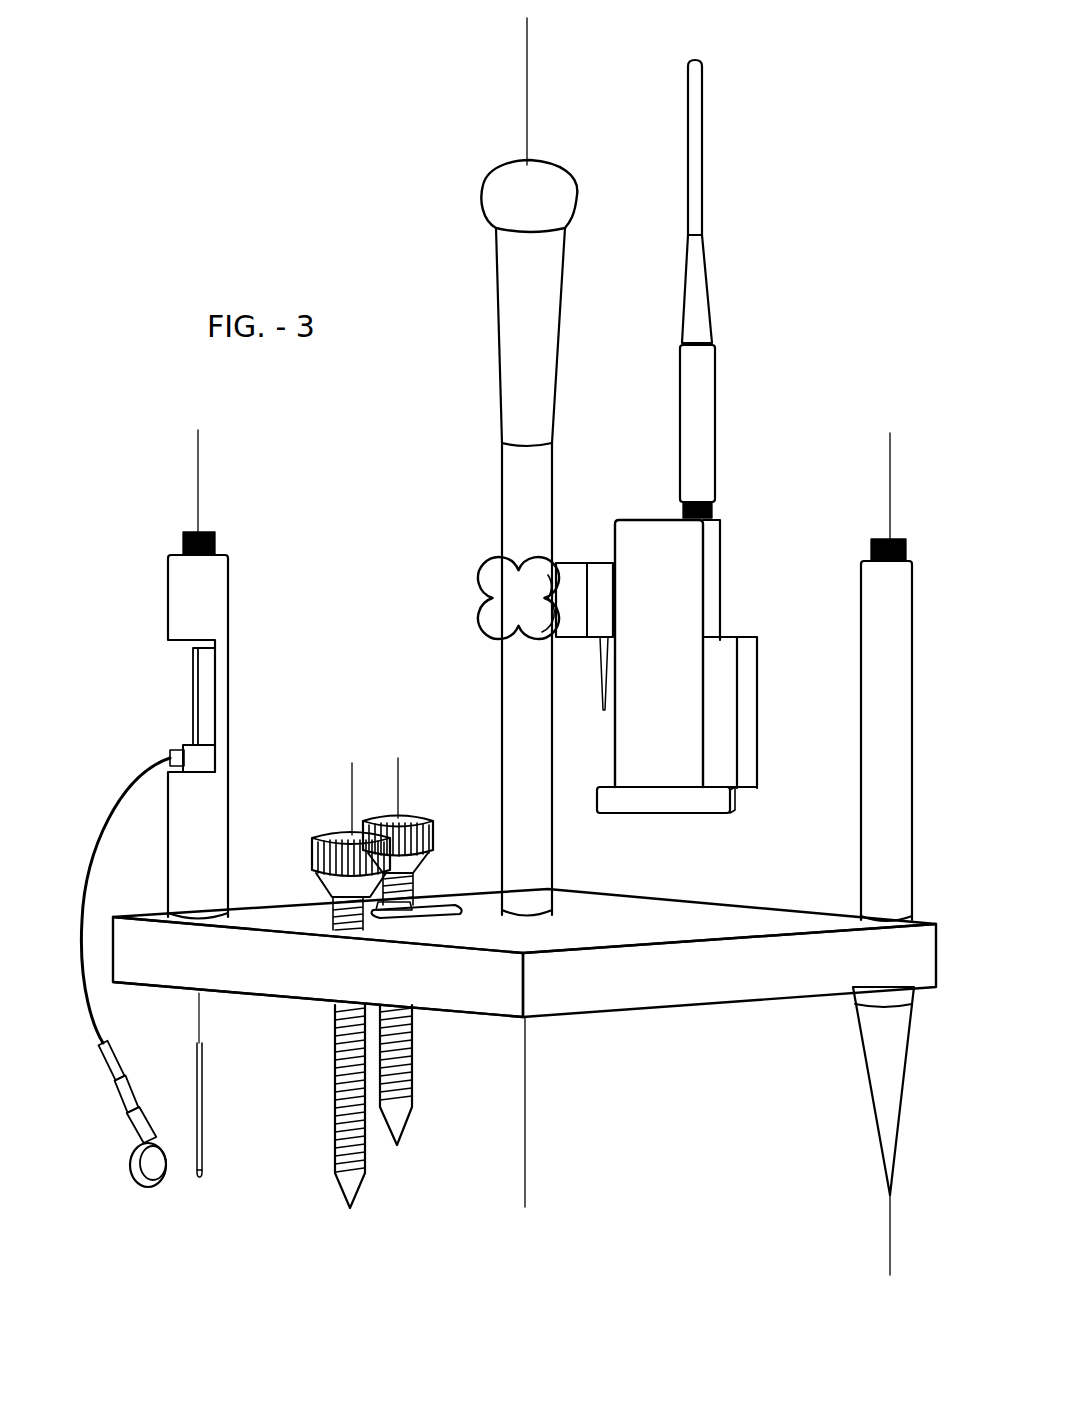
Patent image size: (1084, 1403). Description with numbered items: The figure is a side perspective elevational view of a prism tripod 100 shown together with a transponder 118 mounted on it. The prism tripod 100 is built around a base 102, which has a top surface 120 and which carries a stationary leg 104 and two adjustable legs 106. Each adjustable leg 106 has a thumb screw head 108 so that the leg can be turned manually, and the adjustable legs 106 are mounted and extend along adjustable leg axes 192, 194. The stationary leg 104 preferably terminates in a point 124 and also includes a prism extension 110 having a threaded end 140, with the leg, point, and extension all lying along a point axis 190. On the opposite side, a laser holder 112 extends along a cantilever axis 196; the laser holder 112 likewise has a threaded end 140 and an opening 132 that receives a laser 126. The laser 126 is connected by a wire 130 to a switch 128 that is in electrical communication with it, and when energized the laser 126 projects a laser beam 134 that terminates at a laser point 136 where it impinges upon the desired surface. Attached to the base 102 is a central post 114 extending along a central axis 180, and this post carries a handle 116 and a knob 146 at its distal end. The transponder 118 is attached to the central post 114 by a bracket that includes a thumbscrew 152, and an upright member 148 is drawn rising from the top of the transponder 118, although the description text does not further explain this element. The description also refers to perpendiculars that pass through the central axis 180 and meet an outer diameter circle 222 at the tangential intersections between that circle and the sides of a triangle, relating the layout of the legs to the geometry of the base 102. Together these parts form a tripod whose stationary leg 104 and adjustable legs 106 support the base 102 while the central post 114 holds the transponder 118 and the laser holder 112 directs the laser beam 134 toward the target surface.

The prism tripod 100 is at (268, 147).
The base 102 is at (570, 995).
The stationary leg 104 is at (858, 1022).
The adjustable legs 106 is at (412, 1065).
The thumb screw head 108 is at (415, 815).
The prism extension 110 is at (872, 605).
The laser holder 112 is at (197, 602).
The central post 114 is at (515, 462).
The handle 116 is at (515, 345).
The transponder 118 is at (710, 558).
The top surface 120 is at (723, 917).
The point 124 is at (889, 1195).
The laser 126 is at (180, 752).
The switch 128 is at (152, 1187).
The wire 130 is at (93, 1012).
The opening 132 is at (203, 665).
The laser beam 134 is at (200, 1150).
The laser point 136 is at (203, 1180).
The threaded end 140 is at (183, 540).
The knob 146 is at (548, 173).
The rod 148 is at (700, 278).
The thumbscrew 152 is at (480, 582).
The central axis 180 is at (530, 107).
The point axis 190 is at (891, 480).
The adjustable leg axis 192 is at (347, 817).
The adjustable leg axis 194 is at (398, 780).
The cantilever axis 196 is at (200, 453).
The outer diameter circle 222 is at (675, 1010).